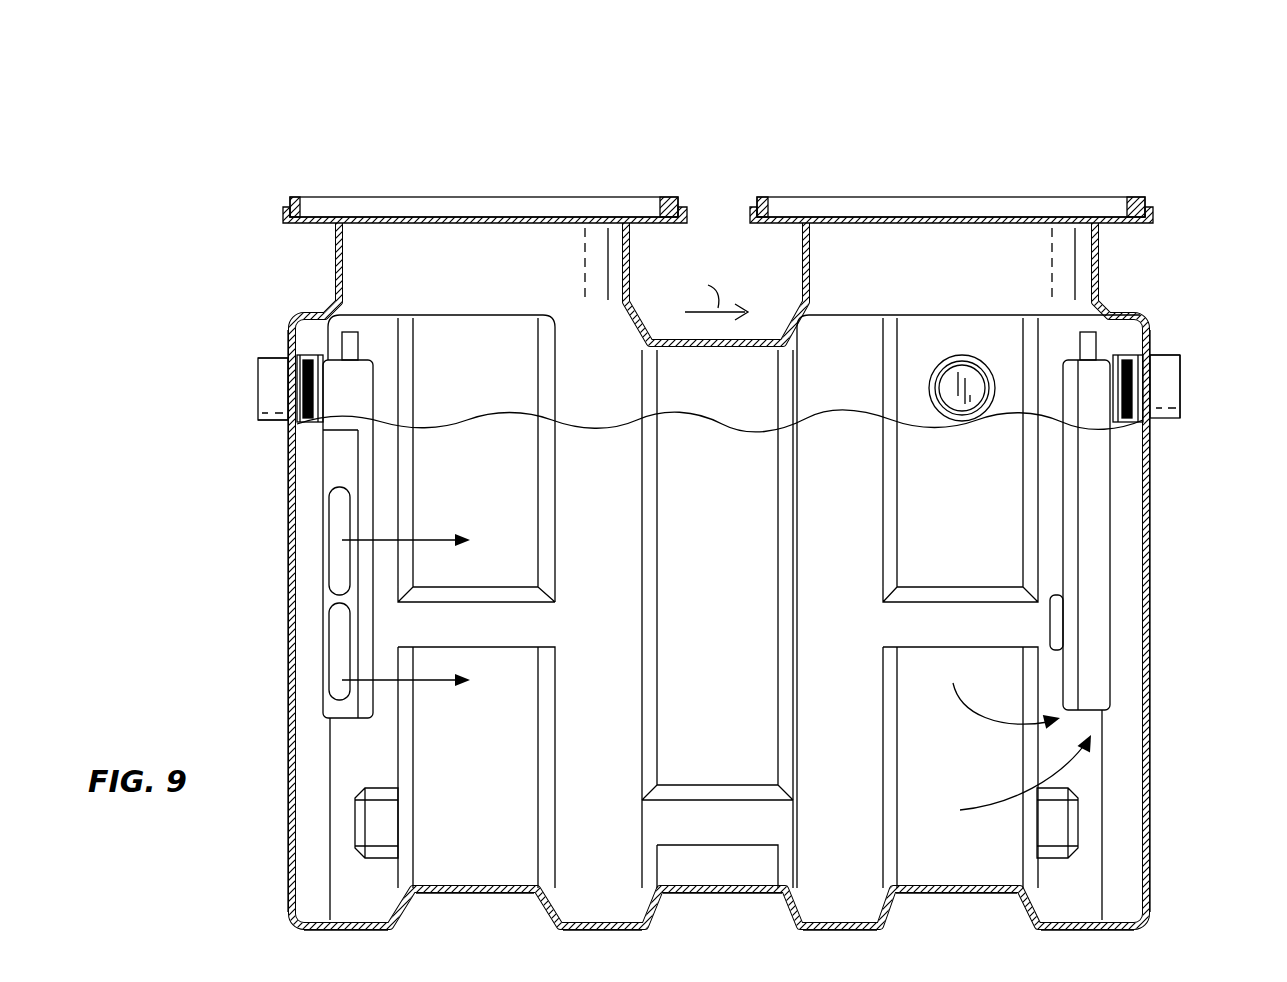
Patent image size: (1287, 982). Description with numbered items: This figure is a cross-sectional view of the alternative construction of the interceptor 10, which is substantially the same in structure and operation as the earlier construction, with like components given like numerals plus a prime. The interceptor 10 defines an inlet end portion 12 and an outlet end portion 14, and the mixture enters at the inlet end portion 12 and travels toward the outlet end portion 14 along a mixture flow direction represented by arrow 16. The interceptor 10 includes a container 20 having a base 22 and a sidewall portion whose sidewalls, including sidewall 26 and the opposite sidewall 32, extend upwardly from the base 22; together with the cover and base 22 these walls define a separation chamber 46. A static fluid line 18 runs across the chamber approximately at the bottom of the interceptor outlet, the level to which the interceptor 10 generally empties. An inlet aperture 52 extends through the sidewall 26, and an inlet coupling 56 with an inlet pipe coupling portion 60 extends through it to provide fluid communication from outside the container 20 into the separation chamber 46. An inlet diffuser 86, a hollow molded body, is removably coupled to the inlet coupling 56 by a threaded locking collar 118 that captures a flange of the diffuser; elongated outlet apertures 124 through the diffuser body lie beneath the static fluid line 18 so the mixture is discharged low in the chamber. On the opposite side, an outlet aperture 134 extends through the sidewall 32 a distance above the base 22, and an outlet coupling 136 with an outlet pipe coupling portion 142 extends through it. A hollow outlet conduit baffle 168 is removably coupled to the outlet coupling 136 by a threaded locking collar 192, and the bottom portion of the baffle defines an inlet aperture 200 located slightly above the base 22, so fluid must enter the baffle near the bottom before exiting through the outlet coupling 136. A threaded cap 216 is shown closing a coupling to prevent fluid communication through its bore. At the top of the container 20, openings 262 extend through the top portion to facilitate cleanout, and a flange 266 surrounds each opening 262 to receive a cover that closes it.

The interceptor 10 is at (1237, 108).
The inlet end portion 12 is at (346, 158).
The outlet end portion 14 is at (1112, 110).
The mixture flow direction 16 is at (715, 296).
The static fluid line 18 is at (698, 430).
The container 20 is at (292, 625).
The base 22 is at (447, 885).
The sidewall 26 is at (292, 490).
The sidewall 32 is at (1150, 800).
The separation chamber 46 is at (445, 358).
The inlet aperture 52 is at (262, 420).
The inlet coupling 56 is at (262, 358).
The inlet pipe coupling portion 60 is at (272, 382).
The inlet diffuser 86 is at (372, 472).
The locking collar 118 is at (318, 378).
The outlet aperture 124 is at (345, 658).
The outlet aperture 134 is at (1180, 405).
The outlet coupling 136 is at (1182, 368).
The outlet pipe coupling portion 142 is at (1160, 357).
The outlet conduit baffle 168 is at (1063, 535).
The locking collar 192 is at (1118, 430).
The inlet aperture 200 is at (1107, 726).
The threaded cap 216 is at (963, 355).
The opening 262 is at (562, 252).
The flange 266 is at (653, 216).